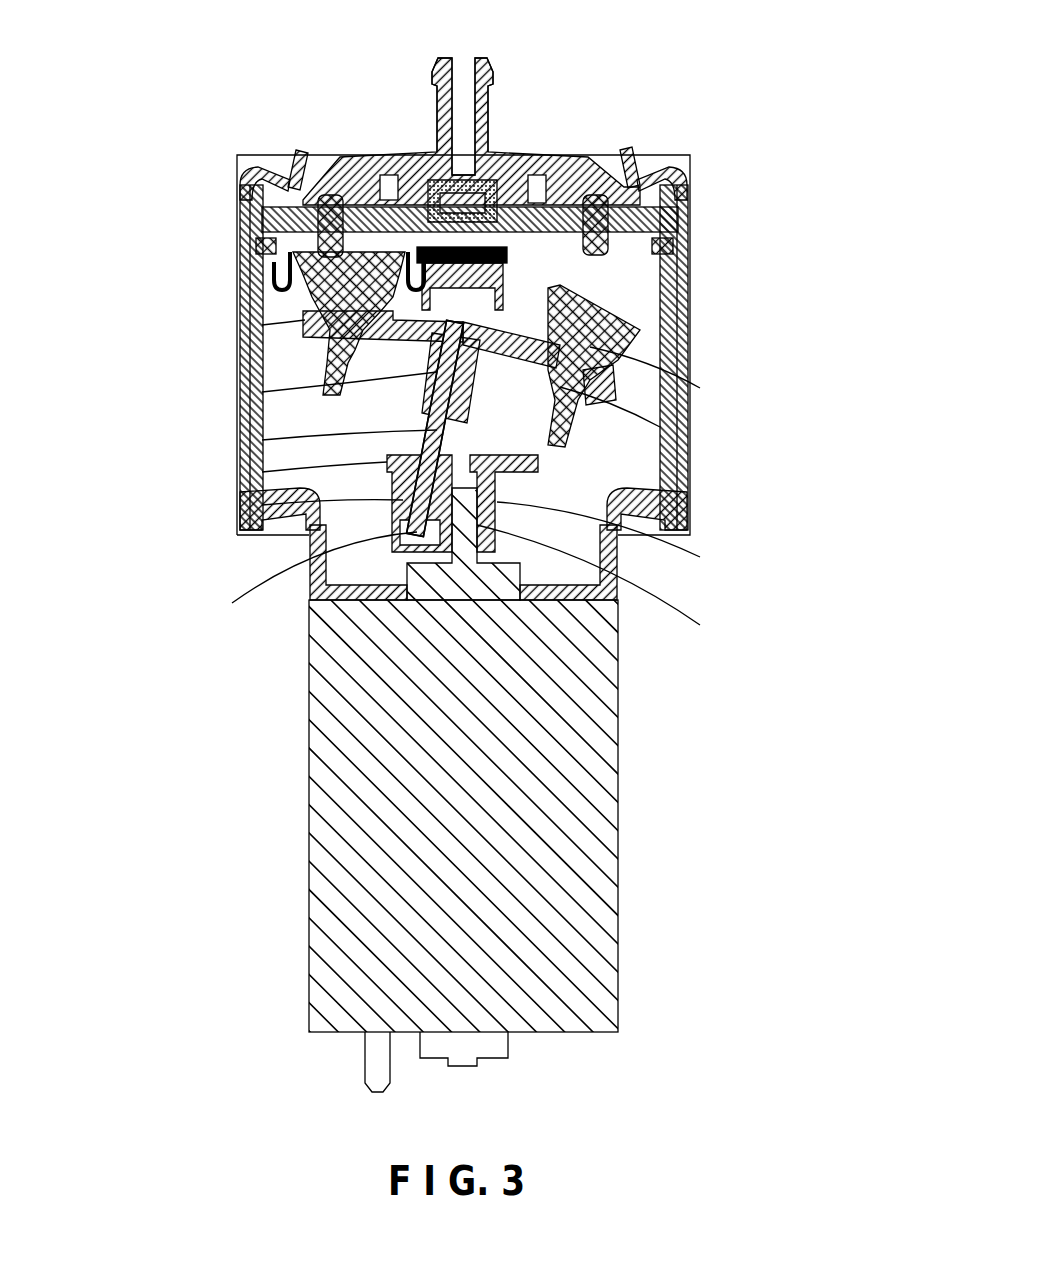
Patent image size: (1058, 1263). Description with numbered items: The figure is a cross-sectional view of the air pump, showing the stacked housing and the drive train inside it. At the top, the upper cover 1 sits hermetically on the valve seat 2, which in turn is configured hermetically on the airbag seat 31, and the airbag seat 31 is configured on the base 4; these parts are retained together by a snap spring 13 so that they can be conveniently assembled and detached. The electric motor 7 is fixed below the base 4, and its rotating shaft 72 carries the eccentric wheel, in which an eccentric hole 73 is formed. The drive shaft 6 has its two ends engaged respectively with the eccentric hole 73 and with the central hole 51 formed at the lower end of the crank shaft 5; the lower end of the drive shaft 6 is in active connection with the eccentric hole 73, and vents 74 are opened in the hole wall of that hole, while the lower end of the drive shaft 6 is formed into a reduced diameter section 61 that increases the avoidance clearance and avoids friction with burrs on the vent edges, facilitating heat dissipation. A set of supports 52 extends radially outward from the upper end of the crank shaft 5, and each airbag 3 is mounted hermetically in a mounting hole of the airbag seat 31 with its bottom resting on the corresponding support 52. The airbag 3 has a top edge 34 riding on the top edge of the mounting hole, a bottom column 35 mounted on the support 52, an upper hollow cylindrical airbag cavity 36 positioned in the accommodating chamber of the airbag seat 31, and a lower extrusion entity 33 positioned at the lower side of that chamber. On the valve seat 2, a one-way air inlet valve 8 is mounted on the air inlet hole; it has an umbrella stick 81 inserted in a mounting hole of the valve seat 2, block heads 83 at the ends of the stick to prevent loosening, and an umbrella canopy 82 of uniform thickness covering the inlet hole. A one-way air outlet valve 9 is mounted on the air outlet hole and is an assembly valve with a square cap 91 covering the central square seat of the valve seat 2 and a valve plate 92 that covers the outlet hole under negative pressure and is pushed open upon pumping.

The upper cover 1 is at (370, 155).
The snap spring 13 is at (258, 175).
The one-way air outlet valve 9 is at (525, 114).
The square cap 91 is at (500, 160).
The valve plate 92 is at (490, 197).
The valve seat 2 is at (680, 222).
The one-way air inlet valve 8 is at (386, 221).
The umbrella stick 81 is at (240, 222).
The umbrella canopy 82 is at (240, 263).
The block head 83 is at (240, 188).
The airbag 3 is at (549, 357).
The airbag seat 31 is at (665, 350).
The extrusion entity 33 is at (630, 370).
The top edge 34 is at (678, 255).
The bottom column 35 is at (698, 410).
The hollow cylindrical airbag cavity 36 is at (632, 290).
The crank shaft 5 is at (330, 328).
The central hole 51 is at (300, 380).
The support 52 is at (300, 322).
The drive shaft 6 is at (420, 445).
The rotating shaft 72 is at (395, 462).
The eccentric hole 73 is at (465, 565).
The vent 74 is at (410, 535).
The base 4 is at (665, 495).
The reduced diameter section 61 is at (640, 545).
The electric motor 7 is at (588, 808).